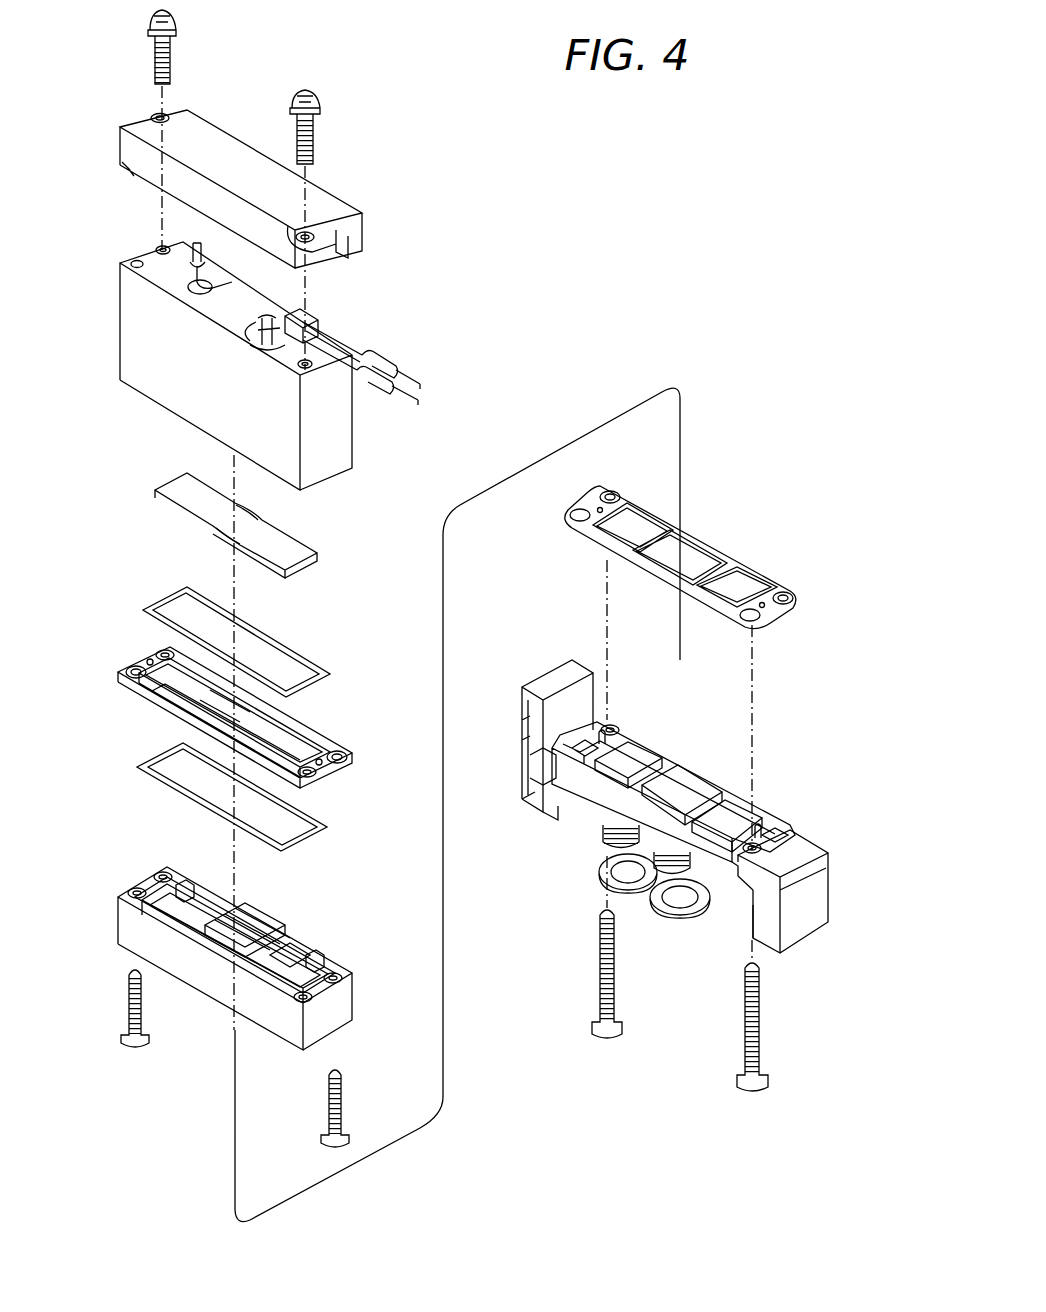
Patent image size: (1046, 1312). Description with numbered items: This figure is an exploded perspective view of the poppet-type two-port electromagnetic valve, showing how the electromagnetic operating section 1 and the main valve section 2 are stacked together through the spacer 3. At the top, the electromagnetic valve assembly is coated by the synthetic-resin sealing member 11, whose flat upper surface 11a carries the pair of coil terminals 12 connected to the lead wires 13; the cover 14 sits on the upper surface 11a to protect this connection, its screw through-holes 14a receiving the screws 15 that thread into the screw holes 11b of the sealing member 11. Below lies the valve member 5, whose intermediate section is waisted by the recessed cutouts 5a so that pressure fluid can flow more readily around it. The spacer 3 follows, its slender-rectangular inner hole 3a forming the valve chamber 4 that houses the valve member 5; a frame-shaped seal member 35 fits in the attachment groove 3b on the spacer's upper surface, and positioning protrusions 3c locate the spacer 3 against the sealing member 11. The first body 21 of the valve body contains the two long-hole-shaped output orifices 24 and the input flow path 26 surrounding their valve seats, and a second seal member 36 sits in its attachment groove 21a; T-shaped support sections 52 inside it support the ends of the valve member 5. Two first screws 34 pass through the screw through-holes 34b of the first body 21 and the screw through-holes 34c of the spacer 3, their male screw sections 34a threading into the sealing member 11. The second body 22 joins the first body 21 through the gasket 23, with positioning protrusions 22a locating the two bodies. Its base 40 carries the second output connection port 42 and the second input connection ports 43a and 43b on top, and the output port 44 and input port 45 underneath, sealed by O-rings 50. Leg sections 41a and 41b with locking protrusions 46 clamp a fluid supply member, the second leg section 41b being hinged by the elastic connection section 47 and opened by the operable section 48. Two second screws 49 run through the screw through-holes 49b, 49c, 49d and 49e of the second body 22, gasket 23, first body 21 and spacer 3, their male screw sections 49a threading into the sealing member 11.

The electromagnetic operating section 1 is at (410, 134).
The main valve section 2 is at (153, 1100).
The spacer 3 is at (358, 729).
The inner hole 3a is at (300, 740).
The attachment groove 3b is at (157, 690).
The positioning protrusions 3c is at (145, 660).
The valve chamber 4 is at (215, 702).
The valve member 5 is at (285, 548).
The recessed cutouts 5a is at (250, 514).
The sealing member 11 is at (145, 352).
The upper surface 11a is at (165, 277).
The screw holes 11b is at (156, 250).
The coil terminals 12 is at (194, 240).
The lead wires 13 is at (348, 362).
The cover 14 is at (230, 135).
The screw through-holes 14a is at (310, 232).
The screws 15 is at (150, 20).
The first body 21 is at (215, 978).
The attachment groove 21a is at (278, 928).
The second body 22 is at (595, 793).
The positioning protrusions 22a is at (601, 732).
The gasket 23 is at (705, 540).
The output orifices 24 is at (246, 925).
The input flow path 26 is at (292, 950).
The first screws 34 is at (124, 1042).
The male screw sections 34a is at (126, 985).
The screw through-holes 34b is at (130, 891).
The screw through-holes 34c is at (126, 672).
The seal member 35 is at (262, 625).
The seal member 36 is at (170, 790).
The base 40 is at (790, 852).
The first leg section 41a is at (803, 922).
The second leg section 41b is at (527, 790).
The second output connection port 42 is at (690, 790).
The second input connection port 43a is at (638, 757).
The second input connection port 43b is at (738, 818).
The output port 44 is at (648, 890).
The input port 45 is at (612, 832).
The locking protrusions 46 is at (552, 822).
The elastic connection section 47 is at (535, 768).
The operable section 48 is at (548, 682).
The second screws 49 is at (607, 1045).
The male screw sections 49a is at (602, 920).
The screw through-holes 49b is at (613, 725).
The screw through-holes 49c is at (613, 497).
The screw through-holes 49d is at (163, 870).
The screw through-holes 49e is at (162, 652).
The O-rings 50 is at (690, 915).
The support sections 52 is at (184, 882).